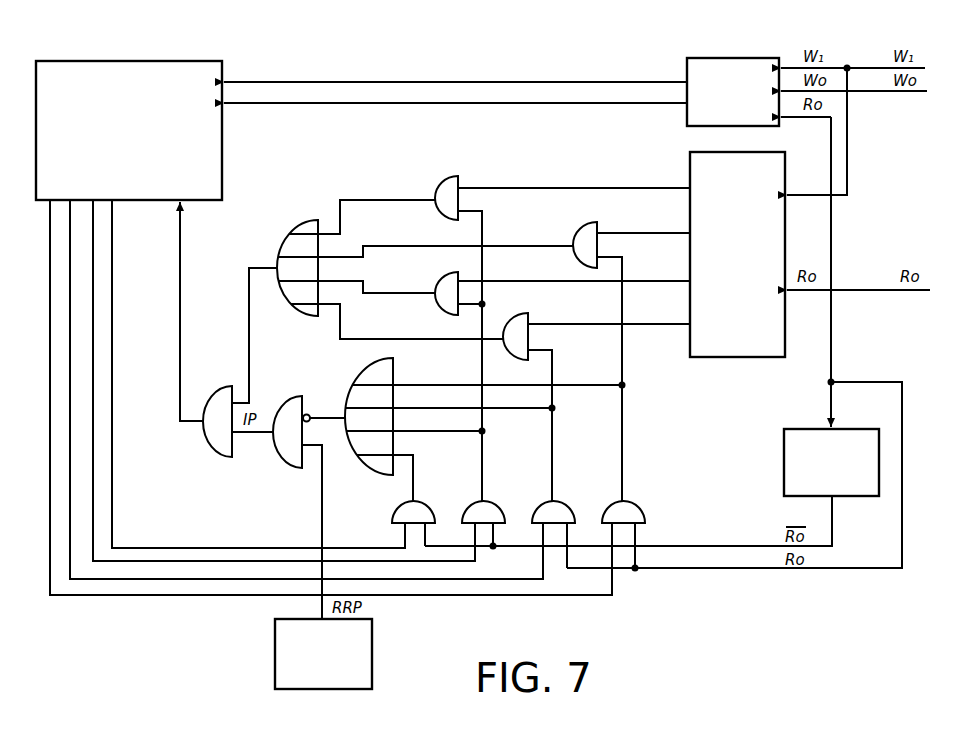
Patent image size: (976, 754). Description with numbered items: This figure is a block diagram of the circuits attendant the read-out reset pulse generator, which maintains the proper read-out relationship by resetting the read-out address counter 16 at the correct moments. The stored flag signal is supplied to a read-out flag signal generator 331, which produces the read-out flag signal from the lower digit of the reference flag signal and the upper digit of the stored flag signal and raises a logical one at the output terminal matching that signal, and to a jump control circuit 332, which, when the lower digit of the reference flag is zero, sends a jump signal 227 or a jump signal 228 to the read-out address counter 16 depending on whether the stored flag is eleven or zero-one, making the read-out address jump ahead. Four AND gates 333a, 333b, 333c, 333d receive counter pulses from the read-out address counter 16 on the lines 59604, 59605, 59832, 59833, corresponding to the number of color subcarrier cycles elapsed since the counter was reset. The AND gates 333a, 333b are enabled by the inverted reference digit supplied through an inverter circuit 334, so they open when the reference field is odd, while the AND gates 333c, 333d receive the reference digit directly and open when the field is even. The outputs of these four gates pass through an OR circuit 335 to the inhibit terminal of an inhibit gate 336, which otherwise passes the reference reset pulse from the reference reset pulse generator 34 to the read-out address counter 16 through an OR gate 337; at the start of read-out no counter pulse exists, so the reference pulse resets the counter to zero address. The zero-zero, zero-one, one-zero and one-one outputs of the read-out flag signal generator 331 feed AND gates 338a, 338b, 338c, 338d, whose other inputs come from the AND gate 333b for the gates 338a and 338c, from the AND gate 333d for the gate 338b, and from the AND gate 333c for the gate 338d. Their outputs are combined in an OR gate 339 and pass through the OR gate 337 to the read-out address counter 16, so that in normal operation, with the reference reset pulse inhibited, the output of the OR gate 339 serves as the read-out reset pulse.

The read-out address counter 16 is at (148, 50).
The reference reset pulse generator 34 is at (372, 648).
The jump signal 227 is at (455, 72).
The jump signal 228 is at (455, 94).
The read-out flag signal generator 331 is at (705, 358).
The jump control circuit 332 is at (748, 58).
The AND gate 333a is at (437, 496).
The AND gate 333b is at (506, 496).
The AND gate 333c is at (576, 496).
The AND gate 333d is at (646, 496).
The inverter circuit 334 is at (784, 486).
The OR circuit 335 is at (366, 470).
The inhibit gate 336 is at (292, 468).
The OR gate 337 is at (228, 457).
The AND gate 338a is at (460, 166).
The AND gate 338b is at (590, 214).
The AND gate 338c is at (440, 278).
The AND gate 338d is at (530, 313).
The OR gate 339 is at (310, 222).
The address line 59604 is at (250, 374).
The address line 59605 is at (274, 380).
The address line 59832 is at (297, 389).
The address line 59833 is at (321, 397).